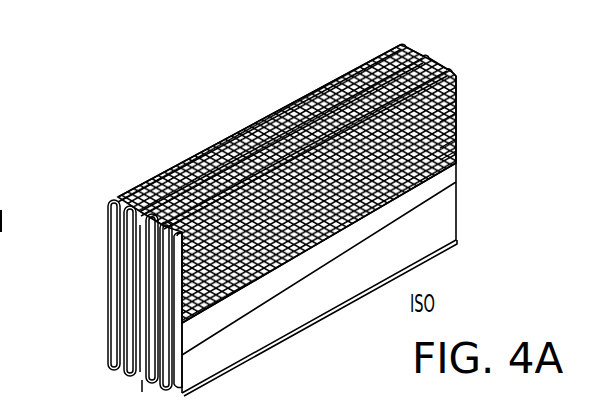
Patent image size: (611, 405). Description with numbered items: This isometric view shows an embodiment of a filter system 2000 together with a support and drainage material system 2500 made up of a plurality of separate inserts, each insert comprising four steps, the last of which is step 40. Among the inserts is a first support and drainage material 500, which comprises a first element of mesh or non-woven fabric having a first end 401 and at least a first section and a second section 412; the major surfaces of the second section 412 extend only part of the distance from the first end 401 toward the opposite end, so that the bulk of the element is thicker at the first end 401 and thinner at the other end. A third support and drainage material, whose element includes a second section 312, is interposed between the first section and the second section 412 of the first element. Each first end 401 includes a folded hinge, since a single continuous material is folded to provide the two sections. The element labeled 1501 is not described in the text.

The filter system 2000 is at (63, 361).
The support and drainage material system 2500 is at (138, 194).
The first end 401 is at (454, 75).
The first support and drainage material 500 is at (480, 90).
The second section 412 is at (457, 117).
The second section 312 is at (453, 141).
The base member 1501 is at (445, 182).
The step 40 is at (181, 324).